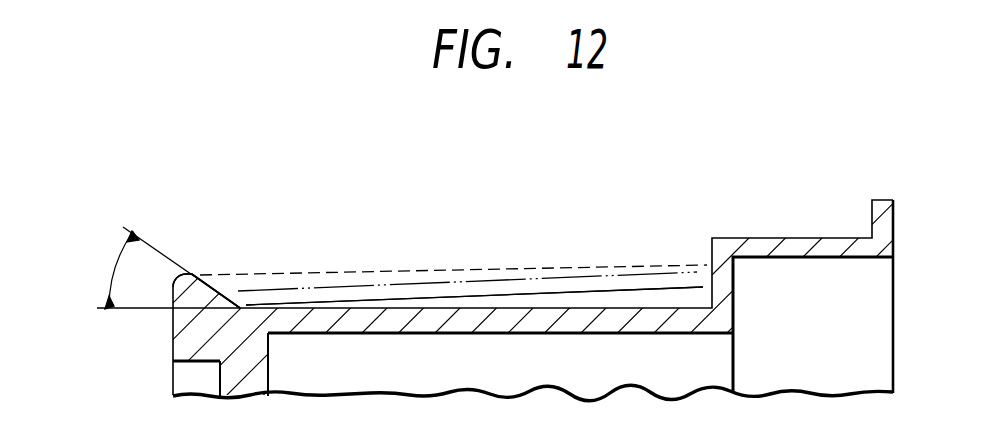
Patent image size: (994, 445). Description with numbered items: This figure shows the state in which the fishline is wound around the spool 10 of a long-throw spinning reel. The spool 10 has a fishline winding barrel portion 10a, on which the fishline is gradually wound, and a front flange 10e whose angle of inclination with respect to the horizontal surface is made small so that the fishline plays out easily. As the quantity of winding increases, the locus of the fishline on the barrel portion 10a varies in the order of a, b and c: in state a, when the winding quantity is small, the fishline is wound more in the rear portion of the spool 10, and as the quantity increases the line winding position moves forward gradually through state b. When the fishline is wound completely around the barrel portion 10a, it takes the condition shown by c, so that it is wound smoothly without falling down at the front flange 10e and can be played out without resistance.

The spool 10 is at (776, 248).
The front flange 10e is at (193, 275).
The fishline winding barrel portion 10a is at (328, 306).
The fishline winding state a is at (650, 298).
The fishline winding state b is at (503, 280).
The fishline winding state c is at (368, 272).